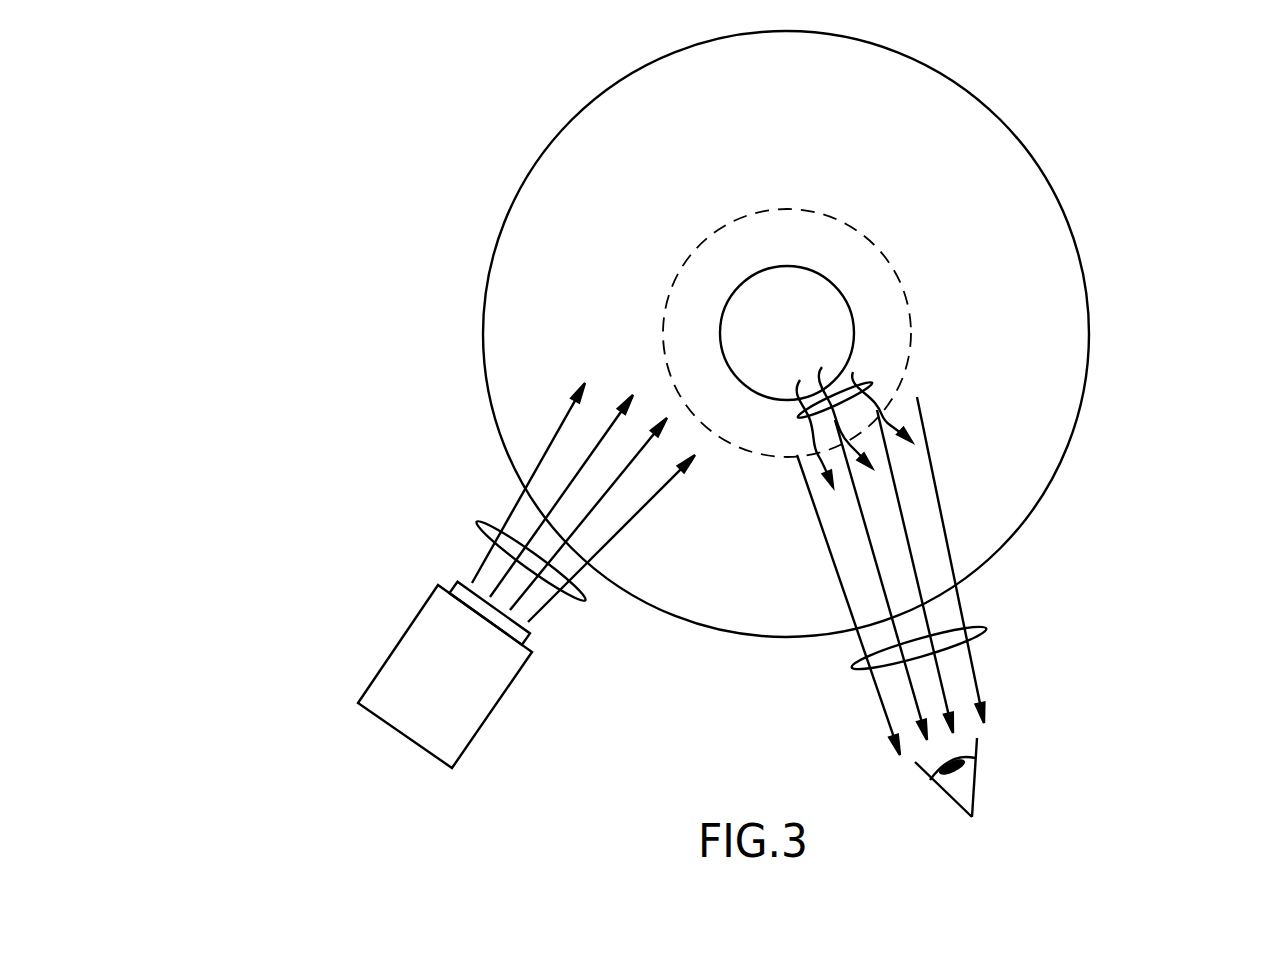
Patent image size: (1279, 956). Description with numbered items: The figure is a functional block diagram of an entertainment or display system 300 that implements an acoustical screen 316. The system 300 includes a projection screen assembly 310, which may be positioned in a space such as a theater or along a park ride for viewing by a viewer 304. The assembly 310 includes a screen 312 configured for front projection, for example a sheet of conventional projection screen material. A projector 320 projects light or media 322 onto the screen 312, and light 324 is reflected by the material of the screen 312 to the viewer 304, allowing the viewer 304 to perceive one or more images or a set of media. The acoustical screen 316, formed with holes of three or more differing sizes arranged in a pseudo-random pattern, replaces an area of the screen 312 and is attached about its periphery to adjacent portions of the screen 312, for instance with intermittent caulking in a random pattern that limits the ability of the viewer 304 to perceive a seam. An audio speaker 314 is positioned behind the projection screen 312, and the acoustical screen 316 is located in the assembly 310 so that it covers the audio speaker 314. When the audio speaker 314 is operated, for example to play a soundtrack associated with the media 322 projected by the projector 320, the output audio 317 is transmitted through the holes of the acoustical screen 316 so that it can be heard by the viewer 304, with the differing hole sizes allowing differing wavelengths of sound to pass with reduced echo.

The entertainment or display system 300 is at (405, 265).
The projection screen assembly 310 is at (1066, 183).
The screen 312 is at (786, 334).
The audio speaker 314 is at (837, 217).
The acoustical screen 316 is at (835, 287).
The output audio 317 is at (877, 380).
The projector 320 is at (475, 738).
The light or media 322 is at (477, 522).
The light 324 is at (987, 630).
The viewer 304 is at (976, 794).